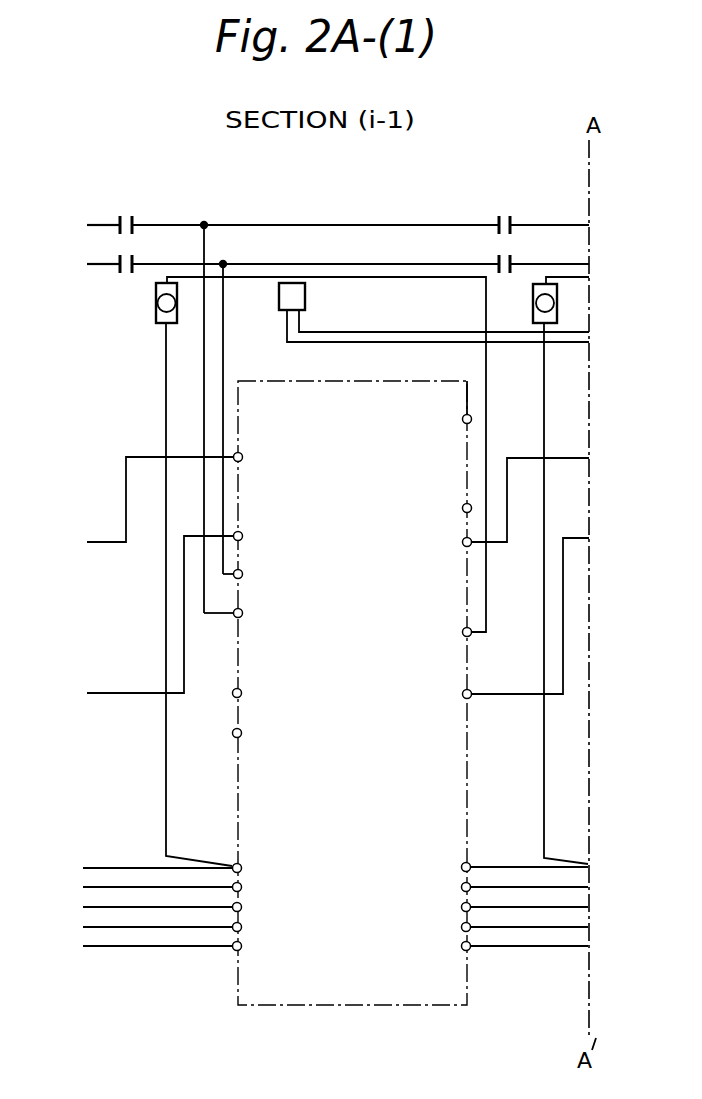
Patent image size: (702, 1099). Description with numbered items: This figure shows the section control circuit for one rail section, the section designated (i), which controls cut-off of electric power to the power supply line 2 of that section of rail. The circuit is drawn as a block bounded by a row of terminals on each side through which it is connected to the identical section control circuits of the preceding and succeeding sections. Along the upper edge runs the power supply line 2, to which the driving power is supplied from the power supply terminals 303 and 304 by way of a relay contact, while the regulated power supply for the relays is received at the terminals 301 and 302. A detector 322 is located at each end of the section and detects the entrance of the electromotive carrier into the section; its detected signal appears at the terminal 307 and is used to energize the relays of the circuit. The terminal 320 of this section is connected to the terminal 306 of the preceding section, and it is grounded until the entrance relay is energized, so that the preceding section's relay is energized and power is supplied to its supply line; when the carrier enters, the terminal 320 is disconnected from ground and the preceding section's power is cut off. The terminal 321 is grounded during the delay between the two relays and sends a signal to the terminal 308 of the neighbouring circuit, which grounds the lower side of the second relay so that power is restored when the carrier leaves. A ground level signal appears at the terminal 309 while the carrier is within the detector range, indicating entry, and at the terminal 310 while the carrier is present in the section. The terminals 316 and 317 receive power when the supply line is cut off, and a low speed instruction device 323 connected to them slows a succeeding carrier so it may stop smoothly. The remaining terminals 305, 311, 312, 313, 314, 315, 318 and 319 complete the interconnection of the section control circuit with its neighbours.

The power supply line 2 is at (313, 264).
The regulated power supply terminal 301 is at (462, 950).
The regulated power supply terminal 302 is at (461, 930).
The power supply terminal 303 is at (461, 907).
The power supply terminal 304 is at (461, 886).
The terminal 305 is at (462, 865).
The terminal 306 is at (462, 695).
The terminal 307 is at (462, 633).
The terminal 308 is at (462, 543).
The terminal 309 is at (462, 509).
The terminal 310 is at (462, 420).
The terminal 311 is at (240, 950).
The terminal 312 is at (241, 930).
The terminal 313 is at (242, 906).
The terminal 314 is at (241, 884).
The terminal 315 is at (240, 864).
The terminal 316 is at (241, 735).
The terminal 317 is at (242, 691).
The terminal 318 is at (242, 615).
The terminal 319 is at (243, 573).
The terminal 320 is at (243, 535).
The terminal 321 is at (243, 455).
The detector 322 is at (156, 317).
The low speed instruction device 323 is at (305, 297).